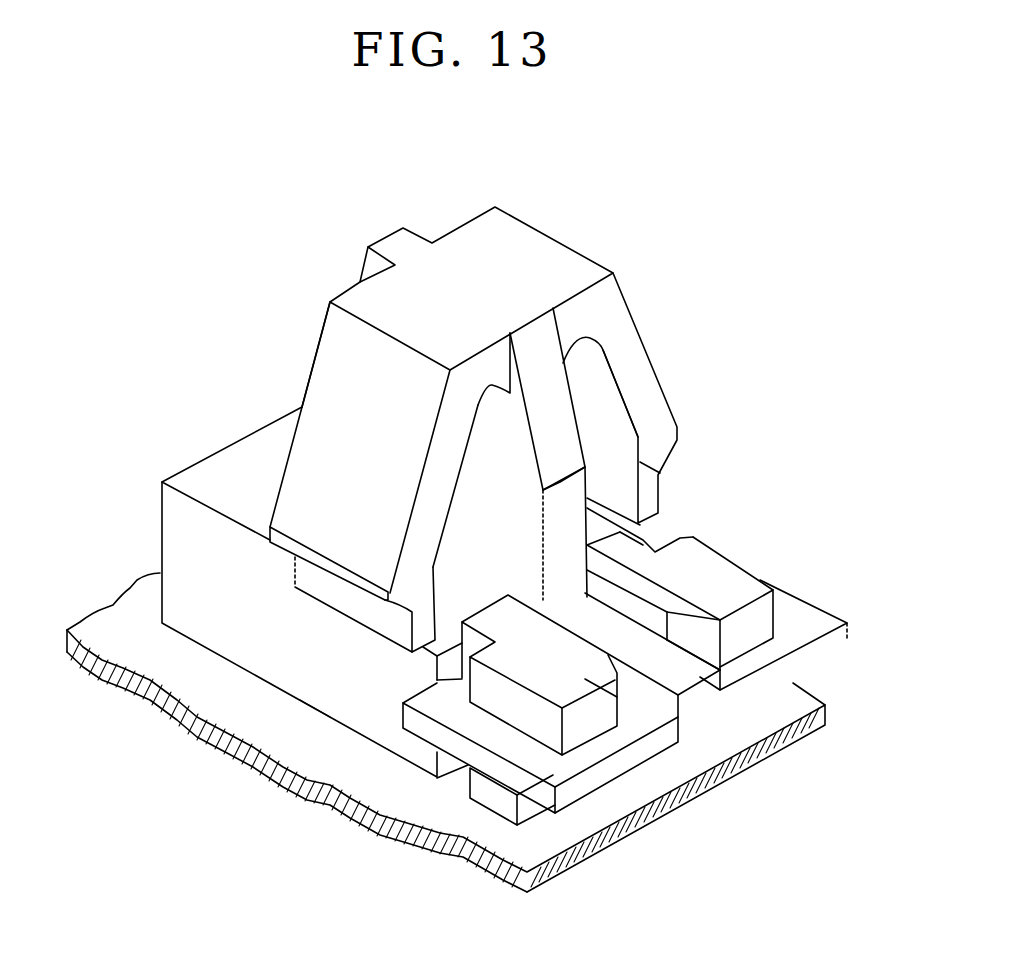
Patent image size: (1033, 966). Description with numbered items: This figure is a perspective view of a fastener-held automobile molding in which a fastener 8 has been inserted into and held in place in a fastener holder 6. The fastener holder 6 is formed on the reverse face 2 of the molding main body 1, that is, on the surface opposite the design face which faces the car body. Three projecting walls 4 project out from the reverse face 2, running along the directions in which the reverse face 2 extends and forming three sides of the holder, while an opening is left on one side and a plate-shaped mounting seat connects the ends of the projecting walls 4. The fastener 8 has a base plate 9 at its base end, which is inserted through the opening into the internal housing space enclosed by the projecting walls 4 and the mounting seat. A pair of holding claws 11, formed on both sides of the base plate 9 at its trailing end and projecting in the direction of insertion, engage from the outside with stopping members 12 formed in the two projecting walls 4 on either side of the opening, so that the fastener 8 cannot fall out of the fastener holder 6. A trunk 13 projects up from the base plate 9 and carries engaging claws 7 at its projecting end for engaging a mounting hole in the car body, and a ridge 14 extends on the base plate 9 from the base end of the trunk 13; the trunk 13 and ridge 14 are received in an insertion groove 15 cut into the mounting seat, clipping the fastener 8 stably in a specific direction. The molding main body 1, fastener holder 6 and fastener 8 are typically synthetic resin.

The molding main body 1 is at (93, 612).
The reverse face 2 is at (120, 637).
The projecting walls 4 is at (310, 713).
The fastener holder 6 is at (237, 678).
The engaging claws 7 is at (283, 470).
The fastener 8 is at (577, 252).
The base plate 9 is at (657, 745).
The holding claws 11 is at (503, 777).
The stopping members 12 is at (478, 637).
The trunk 13 is at (560, 482).
The ridge 14 is at (687, 662).
The insertion groove 15 is at (625, 600).